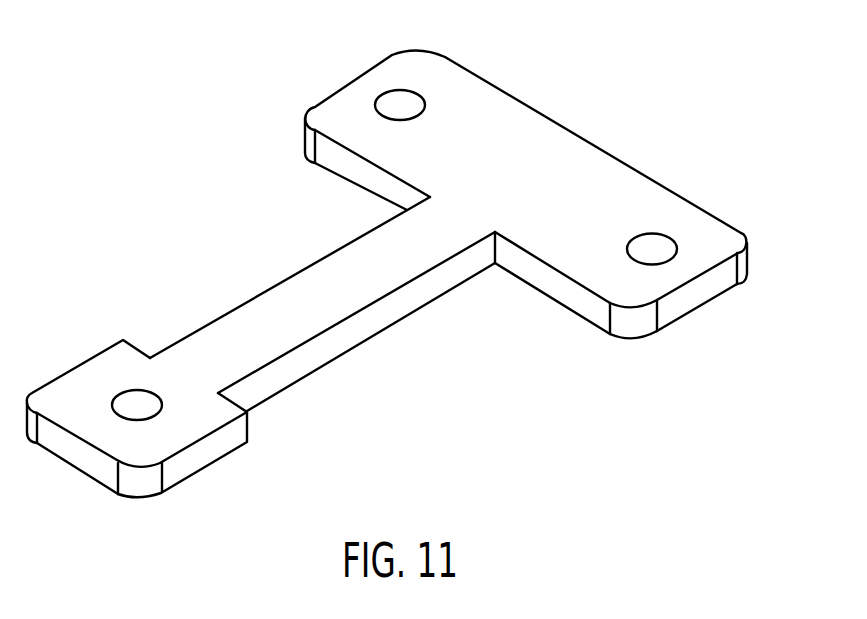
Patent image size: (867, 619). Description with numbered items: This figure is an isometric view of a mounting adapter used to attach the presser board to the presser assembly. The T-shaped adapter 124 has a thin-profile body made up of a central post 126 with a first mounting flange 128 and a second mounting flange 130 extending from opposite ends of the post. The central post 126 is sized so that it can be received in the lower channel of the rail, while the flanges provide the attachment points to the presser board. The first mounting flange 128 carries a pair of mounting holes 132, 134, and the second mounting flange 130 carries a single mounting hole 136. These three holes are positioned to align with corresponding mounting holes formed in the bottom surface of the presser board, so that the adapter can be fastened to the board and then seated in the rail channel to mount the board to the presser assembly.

The T-shaped adapter 124 is at (186, 157).
The central post 126 is at (312, 292).
The first mounting flange 128 is at (587, 172).
The second mounting flange 130 is at (147, 443).
The mounting hole 132 is at (400, 107).
The mounting hole 134 is at (652, 248).
The mounting hole 136 is at (138, 402).